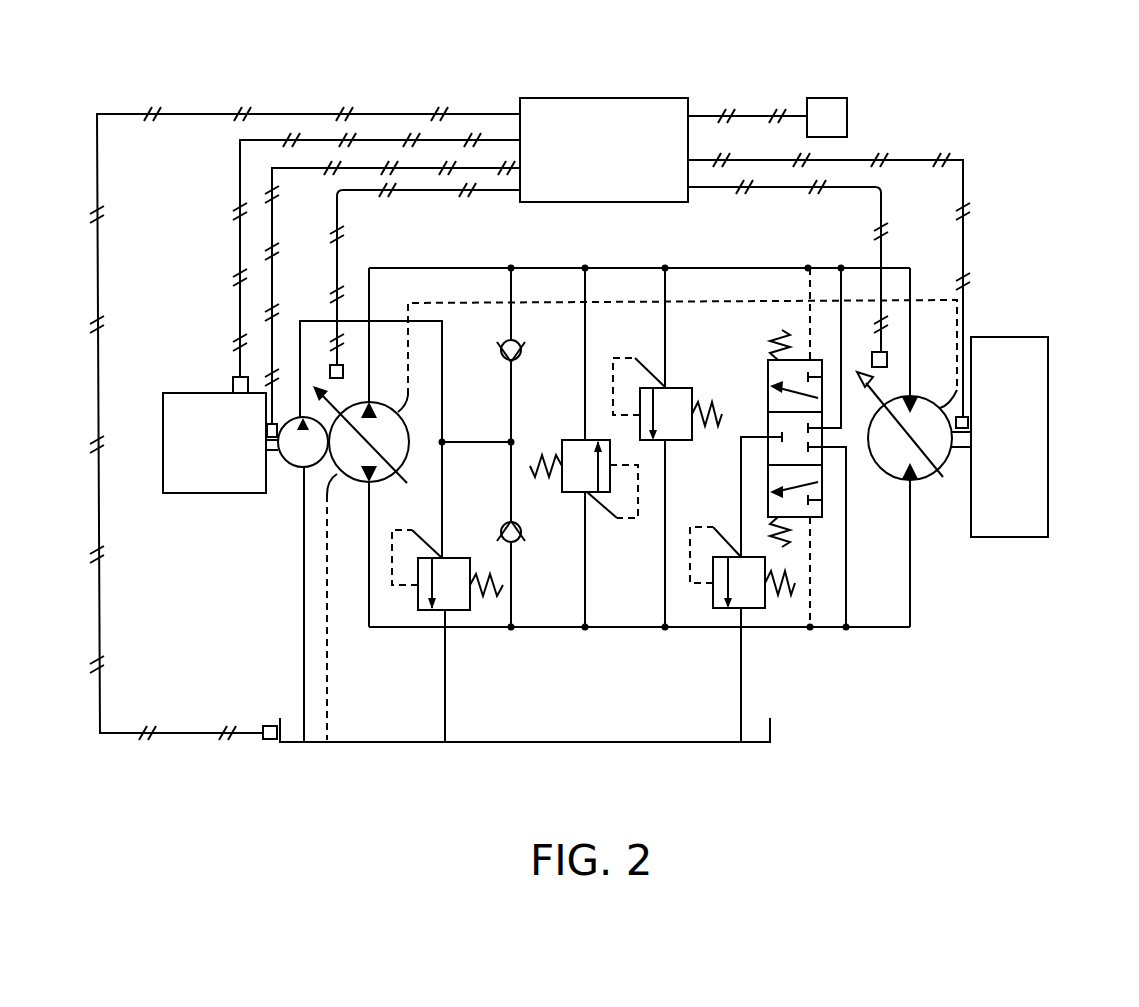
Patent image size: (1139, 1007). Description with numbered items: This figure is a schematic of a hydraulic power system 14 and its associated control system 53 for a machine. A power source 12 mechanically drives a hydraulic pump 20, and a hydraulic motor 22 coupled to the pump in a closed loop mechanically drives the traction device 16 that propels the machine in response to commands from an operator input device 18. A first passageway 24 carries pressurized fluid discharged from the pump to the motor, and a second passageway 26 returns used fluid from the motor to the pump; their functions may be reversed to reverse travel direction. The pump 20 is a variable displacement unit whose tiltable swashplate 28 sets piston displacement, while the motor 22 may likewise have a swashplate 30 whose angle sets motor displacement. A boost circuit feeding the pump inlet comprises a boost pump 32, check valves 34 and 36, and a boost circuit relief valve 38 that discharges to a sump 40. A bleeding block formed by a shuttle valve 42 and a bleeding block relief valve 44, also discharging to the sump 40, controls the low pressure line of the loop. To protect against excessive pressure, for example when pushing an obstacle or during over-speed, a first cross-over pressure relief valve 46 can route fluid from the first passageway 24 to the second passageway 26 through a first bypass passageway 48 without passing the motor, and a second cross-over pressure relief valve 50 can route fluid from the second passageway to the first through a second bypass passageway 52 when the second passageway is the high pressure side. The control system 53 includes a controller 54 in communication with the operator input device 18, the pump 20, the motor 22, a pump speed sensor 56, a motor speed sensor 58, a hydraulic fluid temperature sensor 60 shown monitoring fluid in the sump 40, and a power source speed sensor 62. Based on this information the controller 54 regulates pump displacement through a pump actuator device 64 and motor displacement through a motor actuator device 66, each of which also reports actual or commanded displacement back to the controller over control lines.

The power source 12 is at (202, 491).
The hydraulic power system 14 is at (618, 538).
The traction device 16 is at (1050, 432).
The operator input device 18 is at (825, 97).
The hydraulic pump 20 is at (344, 484).
The hydraulic motor 22 is at (927, 480).
The first passageway 24 is at (603, 267).
The second passageway 26 is at (545, 629).
The swashplate 28 is at (402, 474).
The swashplate 30 is at (954, 492).
The boost pump 32 is at (290, 466).
The check valve 34 is at (522, 350).
The check valve 36 is at (517, 541).
The boost circuit relief valve 38 is at (450, 557).
The sump 40 is at (772, 727).
The shuttle valve 42 is at (767, 382).
The bleeding block relief valve 44 is at (710, 583).
The first cross-over pressure relief valve 46 is at (678, 442).
The first bypass passageway 48 is at (667, 505).
The second cross-over pressure relief valve 50 is at (573, 438).
The second bypass passageway 52 is at (587, 337).
The control system 53 is at (614, 76).
The controller 54 is at (552, 203).
The pump speed sensor 56 is at (275, 424).
The motor speed sensor 58 is at (969, 418).
The hydraulic fluid temperature sensor 60 is at (265, 737).
The power source speed sensor 62 is at (233, 380).
The pump actuator device 64 is at (340, 364).
The motor actuator device 66 is at (874, 352).